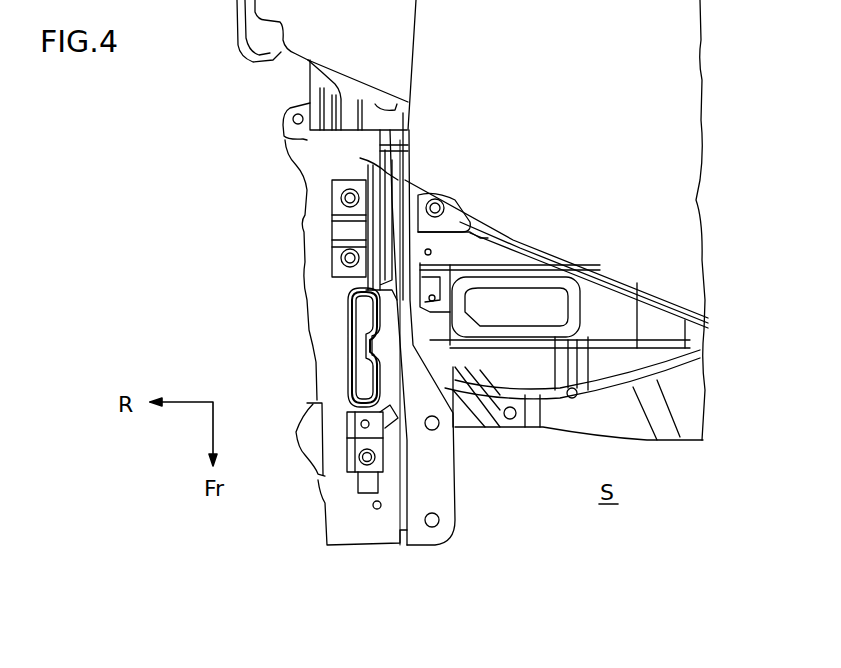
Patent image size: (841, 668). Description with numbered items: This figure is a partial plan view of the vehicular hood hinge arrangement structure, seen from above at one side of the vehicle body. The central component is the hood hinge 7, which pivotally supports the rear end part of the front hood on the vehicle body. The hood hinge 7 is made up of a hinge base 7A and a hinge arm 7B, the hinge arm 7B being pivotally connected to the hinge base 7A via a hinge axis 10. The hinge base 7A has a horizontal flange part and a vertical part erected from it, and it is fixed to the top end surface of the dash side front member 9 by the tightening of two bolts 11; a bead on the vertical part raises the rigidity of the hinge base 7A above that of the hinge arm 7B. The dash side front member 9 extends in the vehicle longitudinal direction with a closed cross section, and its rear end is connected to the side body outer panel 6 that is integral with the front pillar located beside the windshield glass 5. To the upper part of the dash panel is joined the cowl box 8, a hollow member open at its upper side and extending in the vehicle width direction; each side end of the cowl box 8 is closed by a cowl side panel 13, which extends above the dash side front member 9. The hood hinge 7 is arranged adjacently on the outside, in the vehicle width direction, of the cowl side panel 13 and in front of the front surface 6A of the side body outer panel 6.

The windshield glass 5 is at (684, 206).
The side body outer panel 6 is at (287, 64).
The front surface of side body outer panel 6A is at (403, 105).
The hood hinge 7 is at (388, 337).
The hinge base 7A is at (307, 228).
The hinge arm 7B is at (445, 499).
The cowl box 8 is at (668, 326).
The dash side front member 9 is at (313, 383).
The hinge axis 10 is at (388, 213).
The bolts 11 is at (338, 184).
The cowl side panel 13 is at (372, 206).